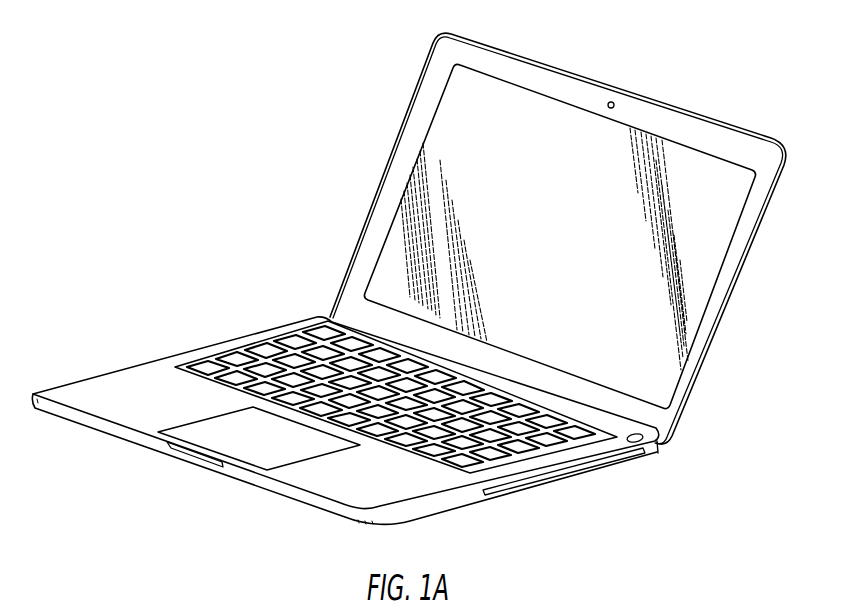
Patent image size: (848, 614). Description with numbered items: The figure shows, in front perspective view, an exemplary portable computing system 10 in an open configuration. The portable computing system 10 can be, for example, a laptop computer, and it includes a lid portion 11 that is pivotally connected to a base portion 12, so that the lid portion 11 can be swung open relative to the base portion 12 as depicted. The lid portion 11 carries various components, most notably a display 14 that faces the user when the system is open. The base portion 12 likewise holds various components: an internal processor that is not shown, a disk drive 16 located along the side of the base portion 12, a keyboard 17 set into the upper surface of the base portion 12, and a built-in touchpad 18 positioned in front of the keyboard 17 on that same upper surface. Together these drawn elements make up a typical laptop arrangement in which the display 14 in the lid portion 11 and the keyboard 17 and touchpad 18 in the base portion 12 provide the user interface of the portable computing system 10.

The portable computing system 10 is at (286, 115).
The lid portion 11 is at (765, 265).
The base portion 12 is at (462, 514).
The display 14 is at (572, 248).
The disk drive 16 is at (558, 483).
The keyboard 17 is at (323, 345).
The built-in touchpad 18 is at (264, 449).